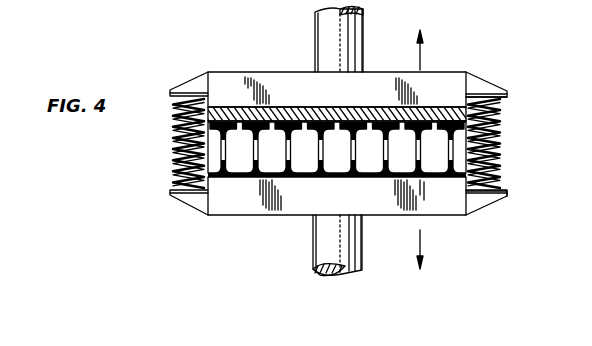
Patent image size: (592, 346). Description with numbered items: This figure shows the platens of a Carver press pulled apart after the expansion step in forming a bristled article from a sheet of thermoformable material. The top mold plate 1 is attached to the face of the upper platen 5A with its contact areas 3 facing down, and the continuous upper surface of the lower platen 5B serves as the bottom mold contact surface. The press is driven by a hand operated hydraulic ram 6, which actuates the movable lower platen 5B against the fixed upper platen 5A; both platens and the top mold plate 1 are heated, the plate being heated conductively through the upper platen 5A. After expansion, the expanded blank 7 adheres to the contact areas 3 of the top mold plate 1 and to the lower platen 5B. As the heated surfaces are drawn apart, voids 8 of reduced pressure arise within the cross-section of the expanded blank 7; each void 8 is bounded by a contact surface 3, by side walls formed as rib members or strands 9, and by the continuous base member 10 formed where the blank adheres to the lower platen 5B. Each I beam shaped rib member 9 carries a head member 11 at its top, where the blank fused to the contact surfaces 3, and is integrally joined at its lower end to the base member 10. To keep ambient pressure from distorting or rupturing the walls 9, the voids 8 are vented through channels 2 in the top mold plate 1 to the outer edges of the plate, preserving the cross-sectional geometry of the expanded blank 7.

The top mold plate 1 is at (500, 110).
The channels 2 is at (364, 112).
The contact areas 3 is at (258, 120).
The upper platen 5A is at (250, 78).
The lower platen 5B is at (238, 203).
The hydraulic ram 6 is at (322, 255).
The expanded blank 7 is at (508, 156).
The voids 8 is at (246, 159).
The rib members or strands 9 is at (347, 158).
The base member 10 is at (508, 170).
The head member 11 is at (449, 115).